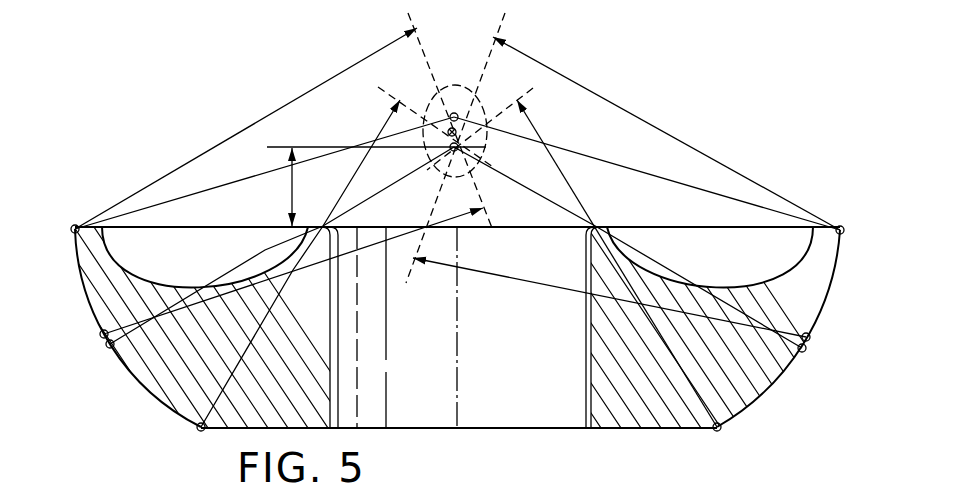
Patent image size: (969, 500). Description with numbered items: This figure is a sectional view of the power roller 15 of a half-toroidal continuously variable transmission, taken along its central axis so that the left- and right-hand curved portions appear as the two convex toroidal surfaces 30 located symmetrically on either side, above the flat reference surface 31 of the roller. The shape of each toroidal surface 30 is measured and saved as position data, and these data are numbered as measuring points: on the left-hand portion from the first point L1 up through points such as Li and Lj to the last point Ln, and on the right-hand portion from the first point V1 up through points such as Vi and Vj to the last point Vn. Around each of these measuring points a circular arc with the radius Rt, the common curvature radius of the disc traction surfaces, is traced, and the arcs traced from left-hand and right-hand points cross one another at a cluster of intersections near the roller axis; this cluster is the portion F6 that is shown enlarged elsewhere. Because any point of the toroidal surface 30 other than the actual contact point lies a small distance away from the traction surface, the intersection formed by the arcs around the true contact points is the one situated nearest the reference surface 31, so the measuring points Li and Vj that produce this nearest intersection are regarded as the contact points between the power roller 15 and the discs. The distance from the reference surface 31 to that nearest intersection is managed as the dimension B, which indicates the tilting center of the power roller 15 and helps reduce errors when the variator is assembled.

The toroidal surface 30 is at (138, 383).
The reference surface 31 is at (189, 226).
The power roller 15 is at (614, 426).
The curvature radius of traction surface Rt is at (293, 101).
The enlarged portion F6 is at (432, 91).
The dimension B is at (288, 191).
The measuring point Ln is at (76, 223).
The measuring point Lj is at (100, 333).
The measuring point Li is at (108, 346).
The measuring point L1 is at (199, 431).
The measuring point Vn is at (840, 225).
The measuring point Vj is at (811, 337).
The measuring point Vi is at (806, 352).
The measuring point V1 is at (721, 431).